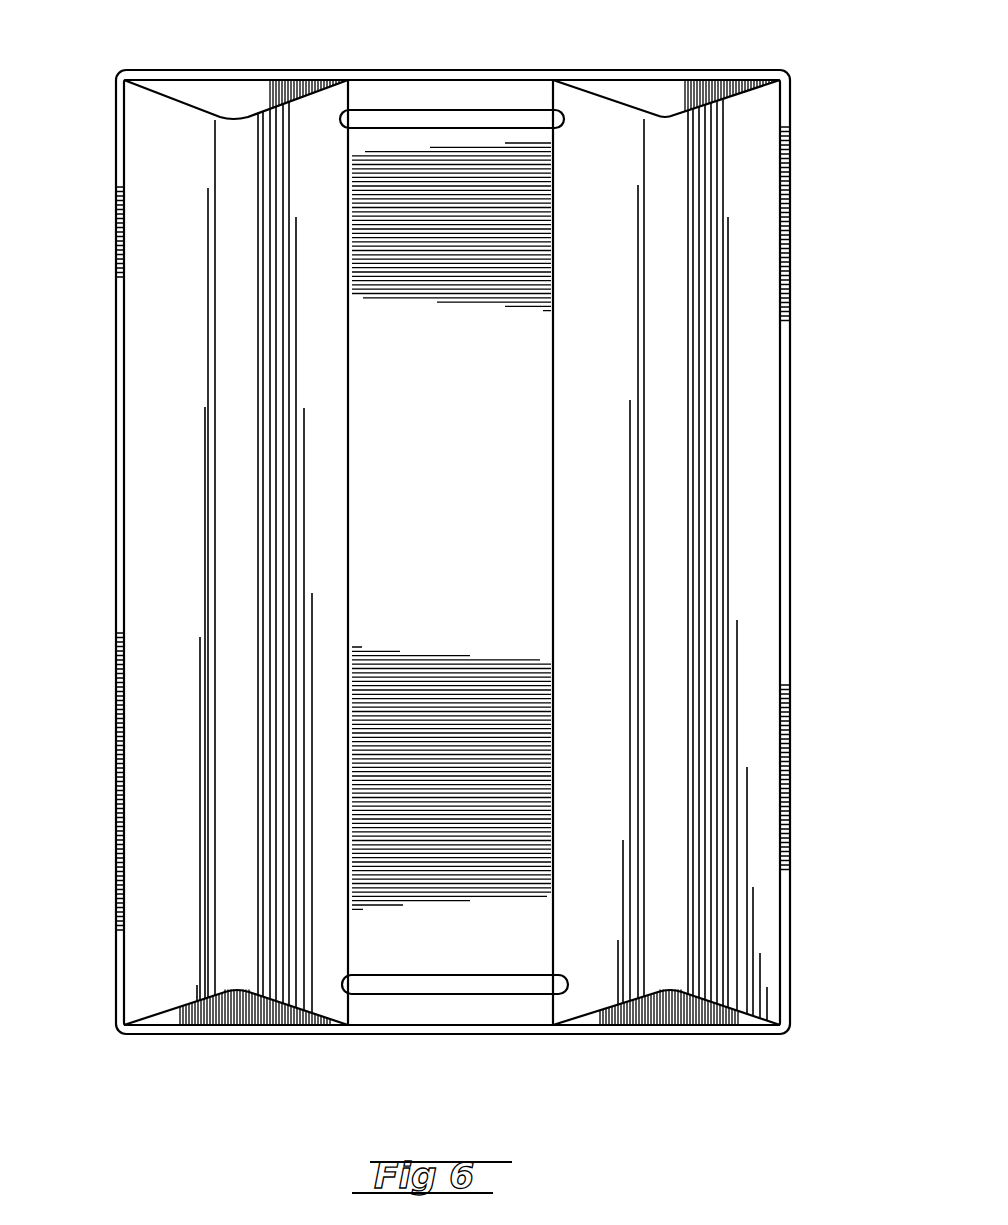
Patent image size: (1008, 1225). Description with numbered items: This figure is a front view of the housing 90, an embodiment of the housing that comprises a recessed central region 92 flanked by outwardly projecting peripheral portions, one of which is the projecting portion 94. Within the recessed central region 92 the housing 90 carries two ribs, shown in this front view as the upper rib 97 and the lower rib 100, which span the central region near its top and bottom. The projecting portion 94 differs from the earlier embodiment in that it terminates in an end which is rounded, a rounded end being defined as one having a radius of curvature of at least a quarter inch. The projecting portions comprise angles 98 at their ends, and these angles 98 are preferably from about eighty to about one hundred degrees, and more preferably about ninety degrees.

The housing 90 is at (838, 300).
The recessed central region 92 is at (455, 922).
The outwardly projecting peripheral portion 94 is at (158, 668).
The upper rib 97 is at (477, 122).
The angle 98 is at (750, 666).
The lower rib 100 is at (483, 985).